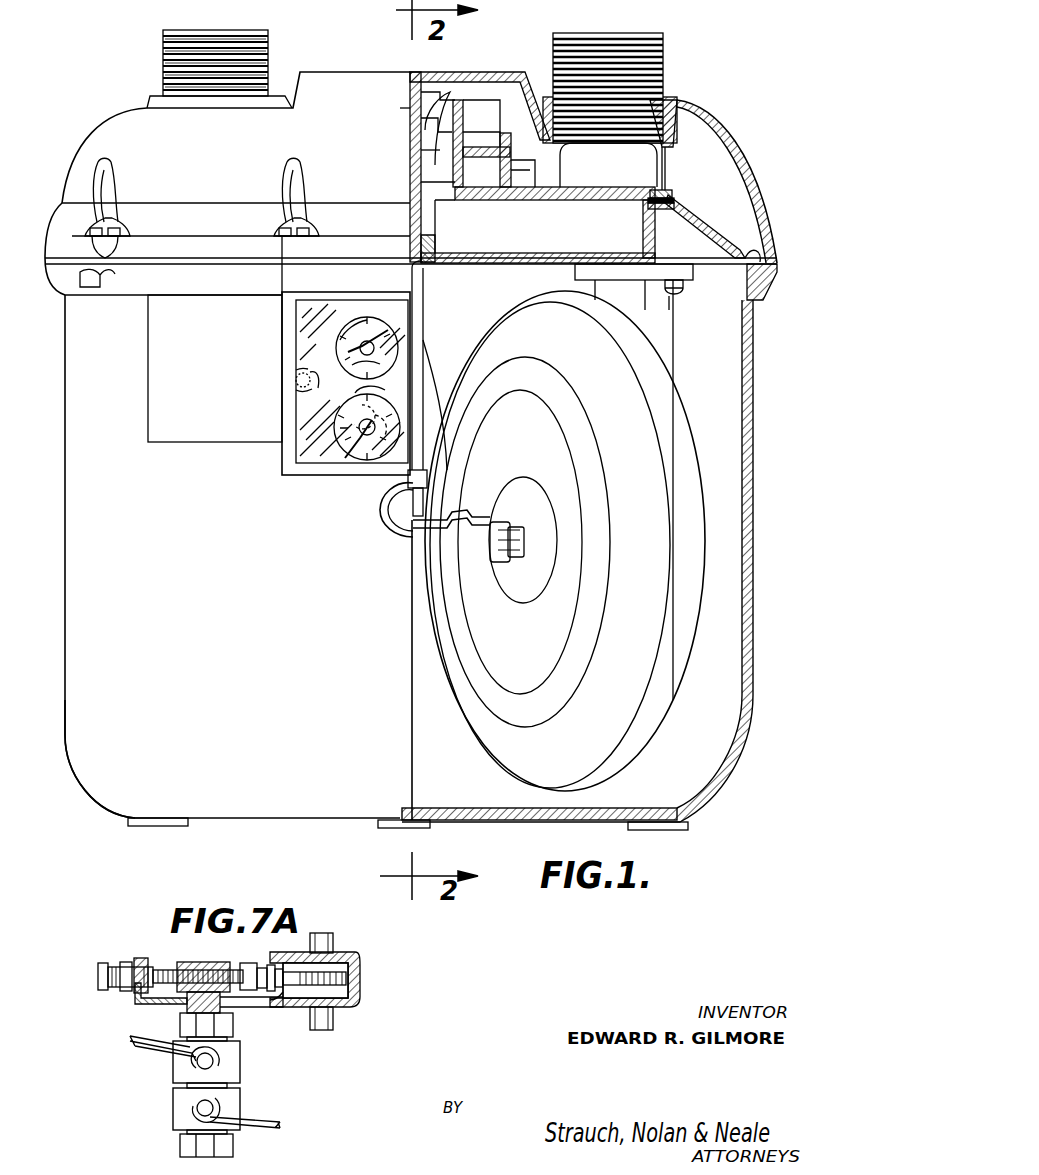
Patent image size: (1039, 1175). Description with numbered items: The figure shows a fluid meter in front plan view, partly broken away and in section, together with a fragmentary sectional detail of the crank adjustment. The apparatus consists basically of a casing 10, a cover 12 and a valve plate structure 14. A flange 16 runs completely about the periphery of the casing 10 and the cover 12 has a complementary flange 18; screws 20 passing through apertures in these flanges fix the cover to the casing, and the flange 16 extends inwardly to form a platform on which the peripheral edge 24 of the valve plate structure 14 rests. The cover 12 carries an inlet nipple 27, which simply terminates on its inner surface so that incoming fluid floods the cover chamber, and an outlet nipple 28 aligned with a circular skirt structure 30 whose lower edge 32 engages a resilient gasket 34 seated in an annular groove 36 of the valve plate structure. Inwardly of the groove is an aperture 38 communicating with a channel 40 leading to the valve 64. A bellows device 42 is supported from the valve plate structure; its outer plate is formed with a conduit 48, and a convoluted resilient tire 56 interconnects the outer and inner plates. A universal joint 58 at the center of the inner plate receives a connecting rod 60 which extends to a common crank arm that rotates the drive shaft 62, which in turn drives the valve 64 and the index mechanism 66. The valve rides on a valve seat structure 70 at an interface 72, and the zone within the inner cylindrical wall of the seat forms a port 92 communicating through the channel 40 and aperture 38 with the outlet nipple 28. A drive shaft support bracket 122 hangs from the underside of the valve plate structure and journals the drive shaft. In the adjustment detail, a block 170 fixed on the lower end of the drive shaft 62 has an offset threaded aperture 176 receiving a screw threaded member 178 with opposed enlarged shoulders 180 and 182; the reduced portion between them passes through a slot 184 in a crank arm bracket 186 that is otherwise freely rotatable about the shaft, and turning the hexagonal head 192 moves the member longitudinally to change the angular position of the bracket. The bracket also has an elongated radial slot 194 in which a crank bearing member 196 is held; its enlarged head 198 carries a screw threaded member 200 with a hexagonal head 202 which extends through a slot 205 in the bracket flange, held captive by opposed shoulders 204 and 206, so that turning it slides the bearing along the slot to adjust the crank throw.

In FIG. 1, the casing 10 is at (92, 789).
In FIG. 1, the cover 12 is at (115, 128).
In FIG. 1, the valve plate structure 14 is at (713, 250).
In FIG. 1, the flange 16 is at (48, 288).
In FIG. 1, the flange 18 is at (47, 232).
In FIG. 1, the screws 20 is at (118, 186).
In FIG. 1, the peripheral edge 24 is at (708, 262).
In FIG. 1, the inlet nipple 27 is at (163, 48).
In FIG. 1, the outlet nipple 28 is at (668, 60).
In FIG. 1, the circular skirt structure 30 is at (665, 166).
In FIG. 1, the lower edge 32 is at (668, 190).
In FIG. 1, the resilient gasket 34 is at (672, 194).
In FIG. 1, the annular groove 36 is at (675, 201).
In FIG. 1, the aperture 38 is at (578, 194).
In FIG. 1, the channel 40 is at (562, 236).
In FIG. 1, the bellows device 42 is at (508, 644).
In FIG. 1, the conduit 48 is at (675, 333).
In FIG. 1, the resilient tire 56 is at (663, 728).
In FIG. 1, the universal joint 58 is at (502, 557).
In FIG. 1, the connecting rod 60 is at (487, 514).
In FIG. 7A, the connecting rod 60 is at (140, 1038).
In FIG. 7A, the drive shaft 62 is at (331, 940).
In FIG. 1, the valve 64 is at (438, 98).
In FIG. 1, the index mechanism 66 is at (305, 470).
In FIG. 1, the valve seat structure 70 is at (478, 194).
In FIG. 1, the interface 72 is at (455, 190).
In FIG. 1, the port 92 is at (465, 95).
In FIG. 1, the drive shaft support bracket 122 is at (425, 325).
In FIG. 7A, the block 170 is at (350, 962).
In FIG. 7A, the threaded aperture 176 is at (335, 1008).
In FIG. 7A, the screw threaded member 178 is at (346, 978).
In FIG. 7A, the enlarged shoulder 180 is at (275, 990).
In FIG. 7A, the enlarged shoulder 182 is at (270, 990).
In FIG. 7A, the slot 184 is at (272, 992).
In FIG. 7A, the crank arm bracket 186 is at (345, 955).
In FIG. 7A, the hexagonal head 192 is at (240, 963).
In FIG. 7A, the elongated slot 194 is at (240, 1007).
In FIG. 7A, the crank bearing member 196 is at (182, 1010).
In FIG. 7A, the enlarged head 198 is at (229, 961).
In FIG. 7A, the screw threaded member 200 is at (178, 945).
In FIG. 7A, the hexagonal head 202 is at (97, 968).
In FIG. 7A, the enlarged shoulder 204 is at (126, 960).
In FIG. 7A, the slot 205 is at (134, 998).
In FIG. 7A, the enlarged shoulder 206 is at (141, 957).